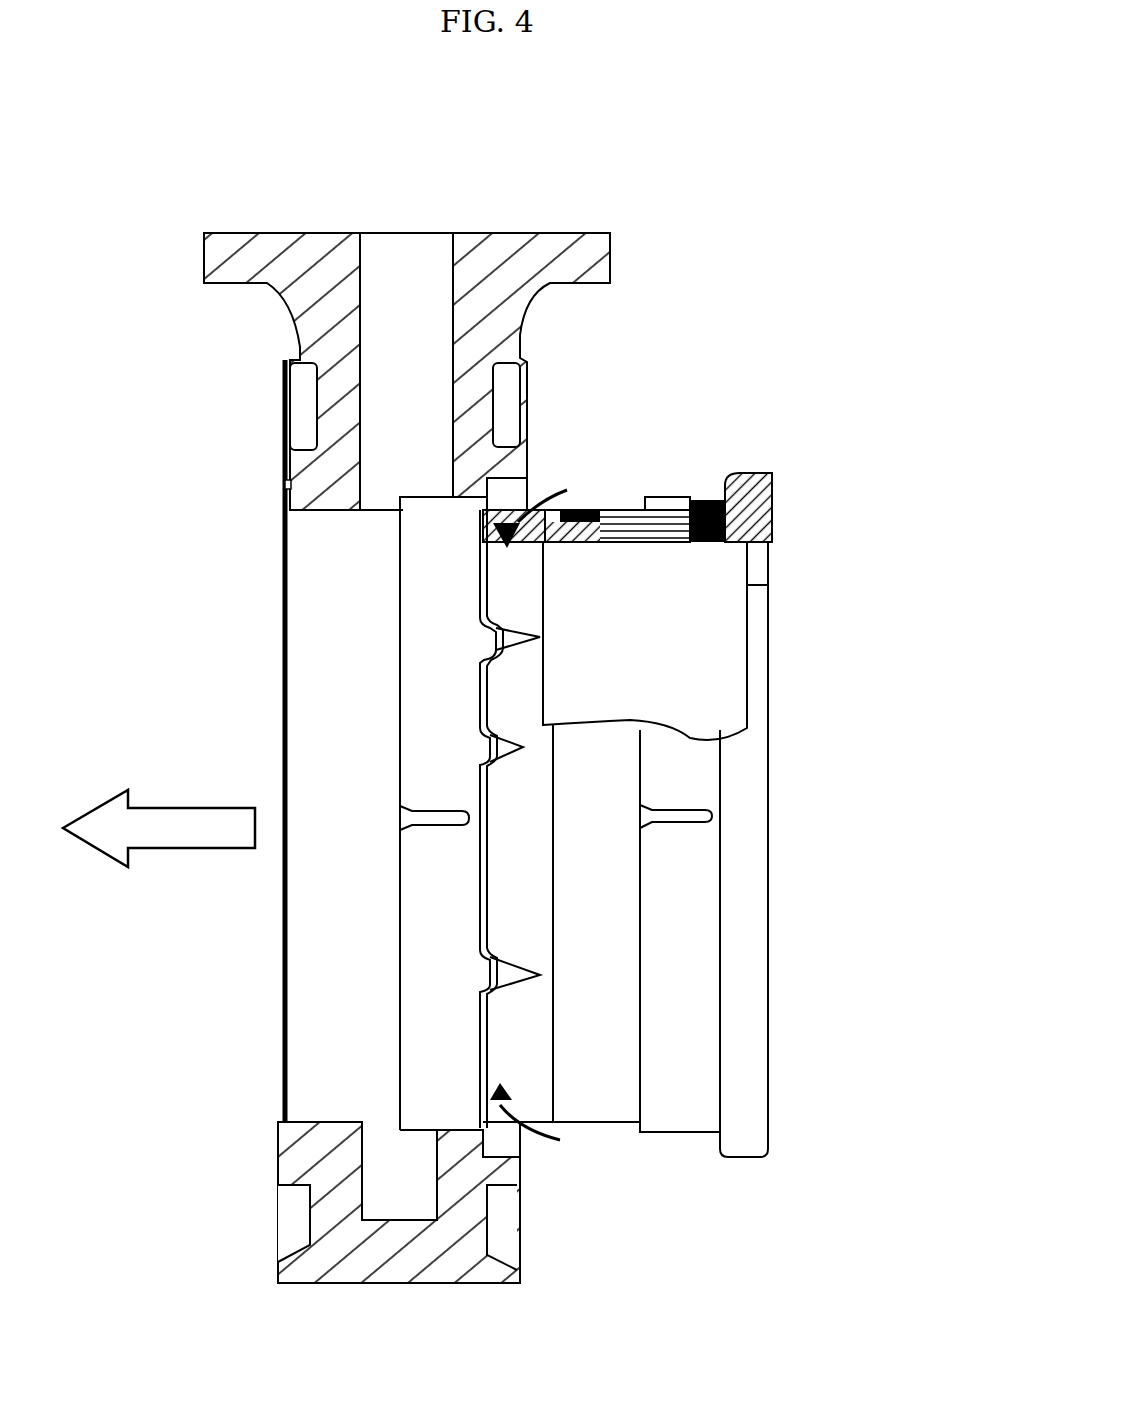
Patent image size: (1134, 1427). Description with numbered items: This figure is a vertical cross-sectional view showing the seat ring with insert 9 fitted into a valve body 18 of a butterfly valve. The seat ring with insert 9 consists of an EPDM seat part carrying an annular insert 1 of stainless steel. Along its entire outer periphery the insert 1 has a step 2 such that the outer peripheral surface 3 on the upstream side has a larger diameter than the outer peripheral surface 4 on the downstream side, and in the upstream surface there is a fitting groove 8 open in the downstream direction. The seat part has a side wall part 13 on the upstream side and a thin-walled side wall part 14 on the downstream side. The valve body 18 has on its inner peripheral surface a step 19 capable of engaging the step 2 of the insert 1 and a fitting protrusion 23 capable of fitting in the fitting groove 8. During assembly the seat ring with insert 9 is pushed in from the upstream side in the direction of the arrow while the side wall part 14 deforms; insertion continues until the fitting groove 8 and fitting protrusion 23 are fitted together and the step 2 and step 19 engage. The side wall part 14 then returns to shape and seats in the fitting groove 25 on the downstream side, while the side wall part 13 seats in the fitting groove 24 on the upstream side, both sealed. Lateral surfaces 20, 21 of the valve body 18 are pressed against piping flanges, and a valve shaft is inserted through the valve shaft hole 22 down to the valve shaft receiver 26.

The insert 1 is at (713, 545).
The step 2 is at (545, 492).
The outer peripheral surface on the upstream side 3 is at (683, 1133).
The outer peripheral surface on the downstream side 4 is at (597, 1122).
The fitting groove 8 is at (683, 822).
The seat ring with insert 9 is at (773, 518).
The side wall part on the upstream side 13 is at (773, 490).
The side wall part on the downstream side 14 is at (490, 545).
The valve body 18 is at (545, 233).
The step 19 is at (398, 1130).
The lateral surface 20 is at (530, 492).
The lateral surface 21 is at (285, 462).
The valve shaft hole 22 is at (385, 233).
The fitting protrusion 23 is at (423, 810).
The fitting groove on the upstream side 24 is at (645, 500).
The fitting groove on the downstream side 25 is at (285, 485).
The valve shaft receiver 26 is at (300, 1242).